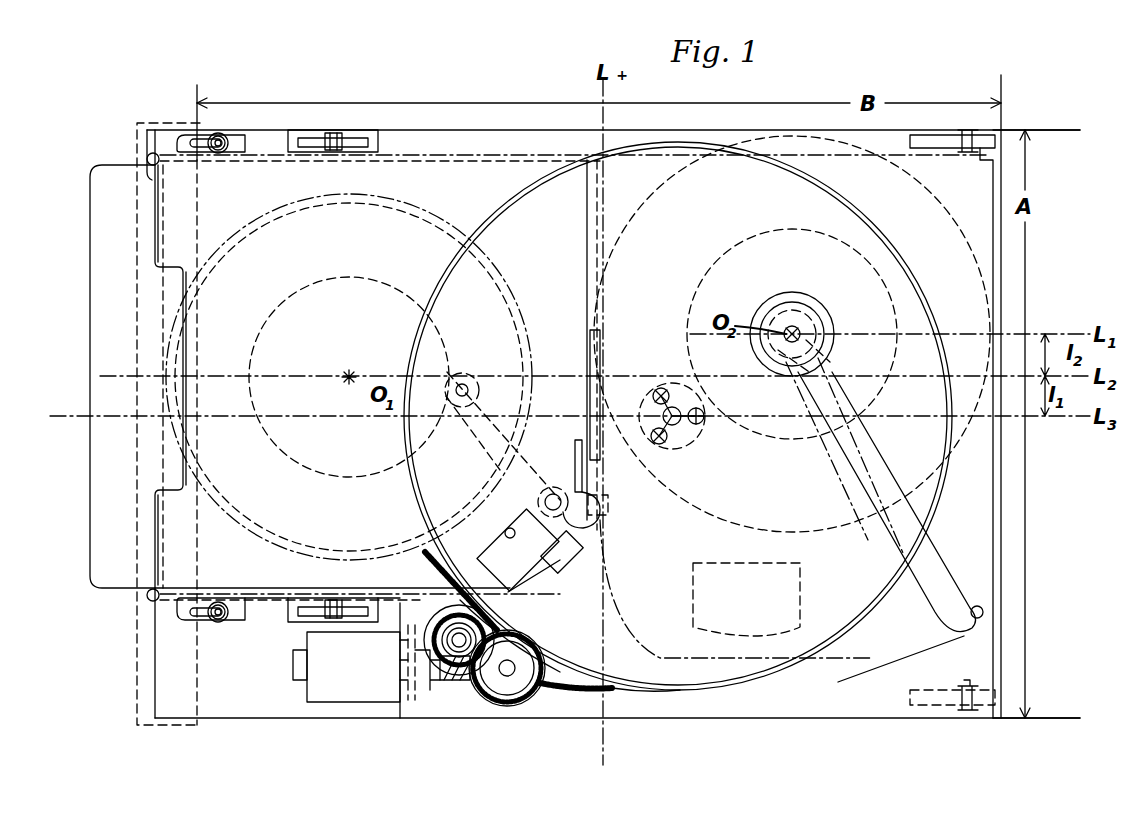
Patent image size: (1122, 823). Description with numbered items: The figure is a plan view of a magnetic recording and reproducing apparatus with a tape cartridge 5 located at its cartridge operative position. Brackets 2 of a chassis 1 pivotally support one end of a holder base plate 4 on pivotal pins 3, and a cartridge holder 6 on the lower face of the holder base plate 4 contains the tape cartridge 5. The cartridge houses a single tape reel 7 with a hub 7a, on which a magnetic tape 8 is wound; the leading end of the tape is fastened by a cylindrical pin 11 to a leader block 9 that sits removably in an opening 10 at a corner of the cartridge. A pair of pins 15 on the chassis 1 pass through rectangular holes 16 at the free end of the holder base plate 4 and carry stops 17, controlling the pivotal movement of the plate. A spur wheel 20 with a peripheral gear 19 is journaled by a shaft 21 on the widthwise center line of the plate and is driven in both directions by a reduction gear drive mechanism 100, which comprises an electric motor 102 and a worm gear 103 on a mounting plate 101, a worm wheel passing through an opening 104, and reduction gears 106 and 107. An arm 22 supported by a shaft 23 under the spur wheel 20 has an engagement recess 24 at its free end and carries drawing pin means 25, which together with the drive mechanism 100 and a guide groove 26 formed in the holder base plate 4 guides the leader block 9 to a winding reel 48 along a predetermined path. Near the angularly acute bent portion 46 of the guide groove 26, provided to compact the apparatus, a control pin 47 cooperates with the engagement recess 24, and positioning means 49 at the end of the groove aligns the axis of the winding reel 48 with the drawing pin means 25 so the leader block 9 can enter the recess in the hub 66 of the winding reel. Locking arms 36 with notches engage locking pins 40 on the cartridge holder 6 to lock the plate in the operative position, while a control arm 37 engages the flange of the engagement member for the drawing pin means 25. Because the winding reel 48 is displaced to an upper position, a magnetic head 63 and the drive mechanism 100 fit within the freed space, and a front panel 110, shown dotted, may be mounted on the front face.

The chassis 1 is at (232, 714).
The bracket 2 is at (927, 140).
The pivotal pin 3 is at (966, 135).
The holder base plate 4 is at (520, 712).
The tape cartridge 5 is at (122, 578).
The cartridge holder 6 is at (274, 598).
The single tape reel 7 is at (437, 213).
The hub 7a is at (361, 285).
The magnetic tape 8 is at (242, 497).
The leader block 9 is at (495, 565).
The opening 10 is at (560, 548).
The cylindrical pin 11 is at (514, 538).
The pin 15 is at (220, 137).
The rectangular hole 16 is at (190, 141).
The stop 17 is at (228, 146).
The gear 19 is at (582, 668).
The spur wheel 20 is at (598, 668).
The shaft 21 is at (678, 424).
The arm 22 is at (538, 437).
The shaft 23 is at (464, 386).
The engagement recess 24 is at (563, 470).
The drawing pin means 25 is at (551, 496).
The guide groove 26 is at (800, 676).
The locking arm 36 is at (318, 139).
The control arm 37 is at (610, 506).
The locking pin 40 is at (336, 145).
The bent portion 46 is at (968, 628).
The control pin 47 is at (983, 610).
The winding reel 48 is at (918, 212).
The positioning means 49 is at (820, 308).
The magnetic head 63 is at (768, 565).
The hub 66 is at (786, 242).
The reduction gear drive mechanism 100 is at (416, 726).
The mounting plate 101 is at (414, 708).
The electric motor 102 is at (345, 700).
The worm gear 103 is at (459, 682).
The opening 104 is at (484, 620).
The reduction gear 106 is at (563, 673).
The reduction gear 107 is at (520, 655).
The front panel 110 is at (142, 702).